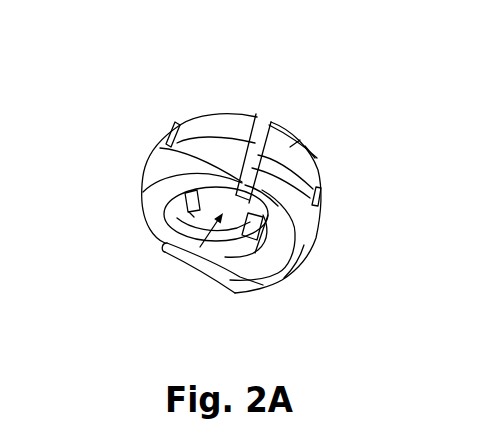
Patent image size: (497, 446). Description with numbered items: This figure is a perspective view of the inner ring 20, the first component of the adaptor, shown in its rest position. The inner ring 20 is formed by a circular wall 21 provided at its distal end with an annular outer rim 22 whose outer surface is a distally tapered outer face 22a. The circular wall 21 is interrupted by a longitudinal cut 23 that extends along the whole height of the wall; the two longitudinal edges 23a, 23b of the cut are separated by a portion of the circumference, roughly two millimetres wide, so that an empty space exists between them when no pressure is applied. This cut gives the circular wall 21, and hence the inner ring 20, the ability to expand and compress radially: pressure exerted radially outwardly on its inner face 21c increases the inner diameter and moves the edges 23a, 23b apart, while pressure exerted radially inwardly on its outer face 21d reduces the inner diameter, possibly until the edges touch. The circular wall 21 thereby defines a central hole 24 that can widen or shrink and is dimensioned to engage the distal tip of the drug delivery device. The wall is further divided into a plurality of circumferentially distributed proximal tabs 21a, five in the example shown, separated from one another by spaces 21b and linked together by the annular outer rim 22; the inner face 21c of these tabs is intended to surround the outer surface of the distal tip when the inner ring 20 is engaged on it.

The inner ring 20 is at (248, 191).
The circular wall 21 is at (333, 171).
The proximal tabs 21a is at (224, 120).
The spaces 21b is at (256, 222).
The inner face 21c is at (255, 253).
The outer face 21d is at (323, 152).
The annular outer rim 22 is at (337, 232).
The distally tapered outer face 22a is at (302, 242).
The longitudinal cut 23 is at (273, 104).
The longitudinal edge 23a is at (160, 148).
The longitudinal edge 23b is at (320, 194).
The central hole 24 is at (167, 243).